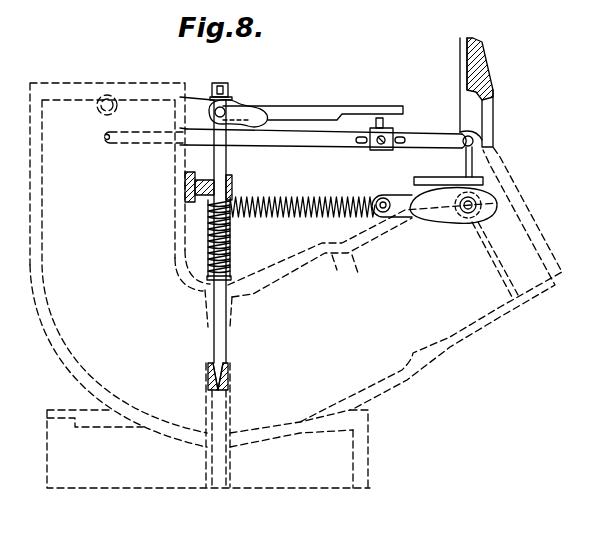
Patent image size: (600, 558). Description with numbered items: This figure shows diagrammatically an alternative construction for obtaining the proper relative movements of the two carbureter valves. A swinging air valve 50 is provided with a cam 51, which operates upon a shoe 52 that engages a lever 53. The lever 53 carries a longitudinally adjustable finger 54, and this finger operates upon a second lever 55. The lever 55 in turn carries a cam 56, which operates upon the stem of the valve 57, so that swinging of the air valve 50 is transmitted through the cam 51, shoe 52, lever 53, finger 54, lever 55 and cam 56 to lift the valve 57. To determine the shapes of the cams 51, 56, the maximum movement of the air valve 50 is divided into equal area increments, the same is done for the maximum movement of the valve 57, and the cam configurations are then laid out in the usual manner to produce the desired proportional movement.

The swinging air valve 50 is at (511, 260).
The cam 51 is at (448, 208).
The shoe 52 is at (438, 177).
The lever 53 is at (433, 137).
The longitudinally adjustable finger 54 is at (383, 128).
The lever 55 is at (326, 107).
The cam 56 is at (257, 113).
The valve 57 is at (222, 338).